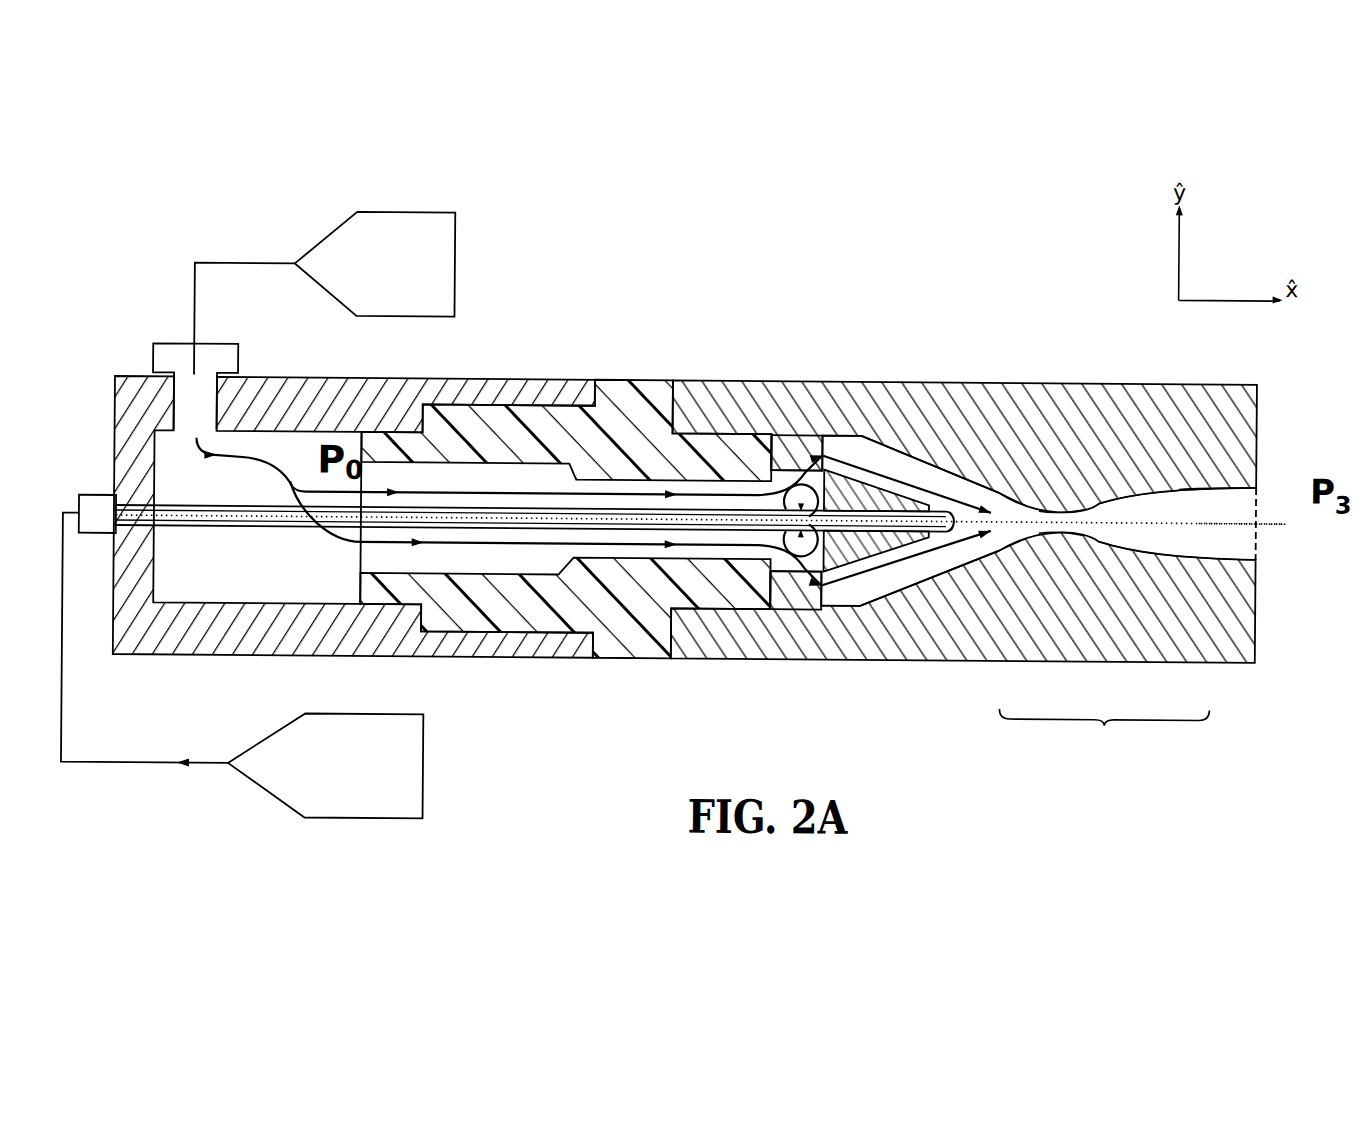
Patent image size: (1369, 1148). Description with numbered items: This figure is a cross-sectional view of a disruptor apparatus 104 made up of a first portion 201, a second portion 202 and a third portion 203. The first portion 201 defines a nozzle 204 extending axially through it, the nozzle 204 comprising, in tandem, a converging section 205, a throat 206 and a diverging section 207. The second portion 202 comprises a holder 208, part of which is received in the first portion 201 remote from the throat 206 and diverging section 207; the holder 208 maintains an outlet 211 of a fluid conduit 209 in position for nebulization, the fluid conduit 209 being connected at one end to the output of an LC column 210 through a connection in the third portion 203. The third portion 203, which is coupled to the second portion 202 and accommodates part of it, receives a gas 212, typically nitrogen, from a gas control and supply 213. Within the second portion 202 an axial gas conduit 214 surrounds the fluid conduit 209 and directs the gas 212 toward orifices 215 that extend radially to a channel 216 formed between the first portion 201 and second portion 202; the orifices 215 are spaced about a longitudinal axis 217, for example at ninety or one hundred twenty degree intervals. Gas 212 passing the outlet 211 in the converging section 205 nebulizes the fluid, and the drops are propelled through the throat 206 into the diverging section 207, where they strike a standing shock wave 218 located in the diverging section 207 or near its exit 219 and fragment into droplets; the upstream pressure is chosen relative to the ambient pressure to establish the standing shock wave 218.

The disruptor apparatus 104 is at (739, 262).
The first portion 201 is at (1120, 377).
The second portion 202 is at (600, 376).
The third portion 203 is at (477, 377).
The nozzle 204 is at (1104, 733).
The converging section 205 is at (1020, 549).
The throat 206 is at (1074, 523).
The diverging section 207 is at (1181, 546).
The holder 208 is at (890, 539).
The fluid conduit 209 is at (273, 527).
The LC column 210 is at (426, 782).
The outlet 211 is at (952, 506).
The gas 212 is at (898, 469).
The gas control and supply 213 is at (404, 210).
The axial gas conduit 214 is at (500, 555).
The orifices 215 is at (782, 485).
The channel 216 is at (877, 451).
The longitudinal axis 217 is at (1229, 518).
The standing shock wave 218 is at (1257, 481).
The exit 219 is at (1273, 504).